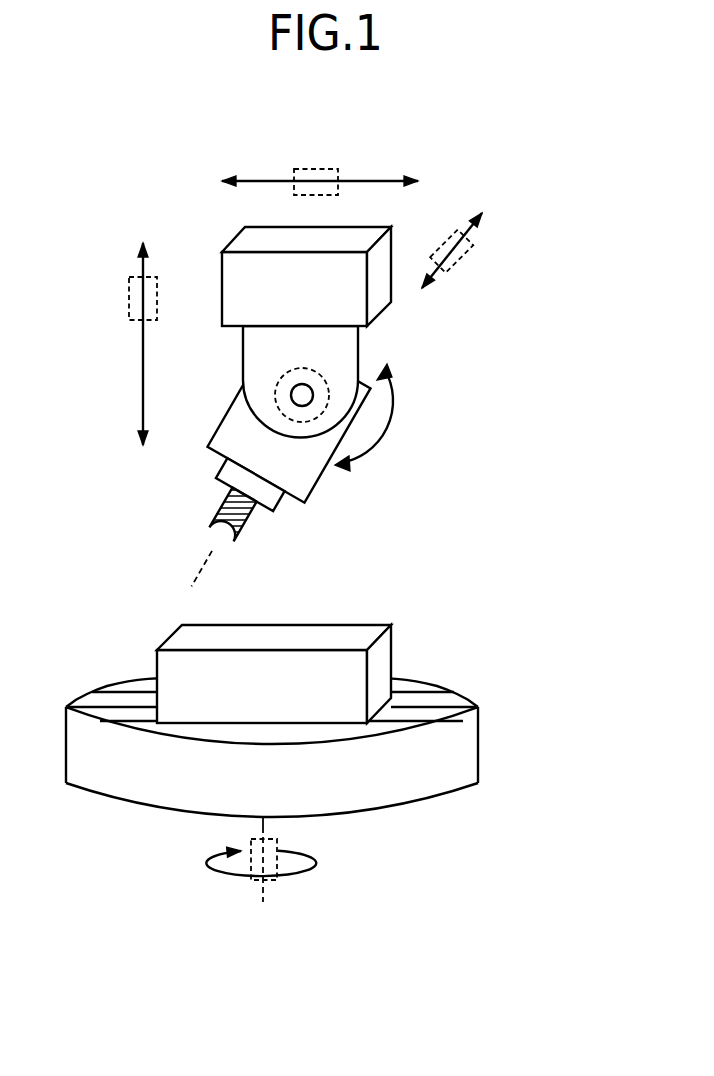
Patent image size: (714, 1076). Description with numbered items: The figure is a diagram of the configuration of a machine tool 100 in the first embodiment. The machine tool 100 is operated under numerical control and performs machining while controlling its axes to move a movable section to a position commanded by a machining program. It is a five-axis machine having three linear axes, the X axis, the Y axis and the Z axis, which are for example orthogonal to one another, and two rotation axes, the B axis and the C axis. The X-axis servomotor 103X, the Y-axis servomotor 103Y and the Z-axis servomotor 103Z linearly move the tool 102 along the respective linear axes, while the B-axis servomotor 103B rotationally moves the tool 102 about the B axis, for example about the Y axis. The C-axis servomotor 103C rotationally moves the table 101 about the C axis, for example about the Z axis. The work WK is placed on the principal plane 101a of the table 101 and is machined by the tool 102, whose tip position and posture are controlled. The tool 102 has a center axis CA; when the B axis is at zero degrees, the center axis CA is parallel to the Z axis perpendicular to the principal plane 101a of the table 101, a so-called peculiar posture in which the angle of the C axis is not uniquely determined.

The machine tool 100 is at (530, 472).
The table 101 is at (478, 742).
The principal plane 101a is at (425, 697).
The tool 102 is at (210, 524).
The X-axis servomotor 103X is at (338, 169).
The Y-axis servomotor 103Y is at (457, 229).
The Z-axis servomotor 103Z is at (129, 280).
The B-axis servomotor 103B is at (323, 377).
The C-axis servomotor 103C is at (278, 840).
The work WK is at (368, 634).
The center axis CA is at (182, 577).